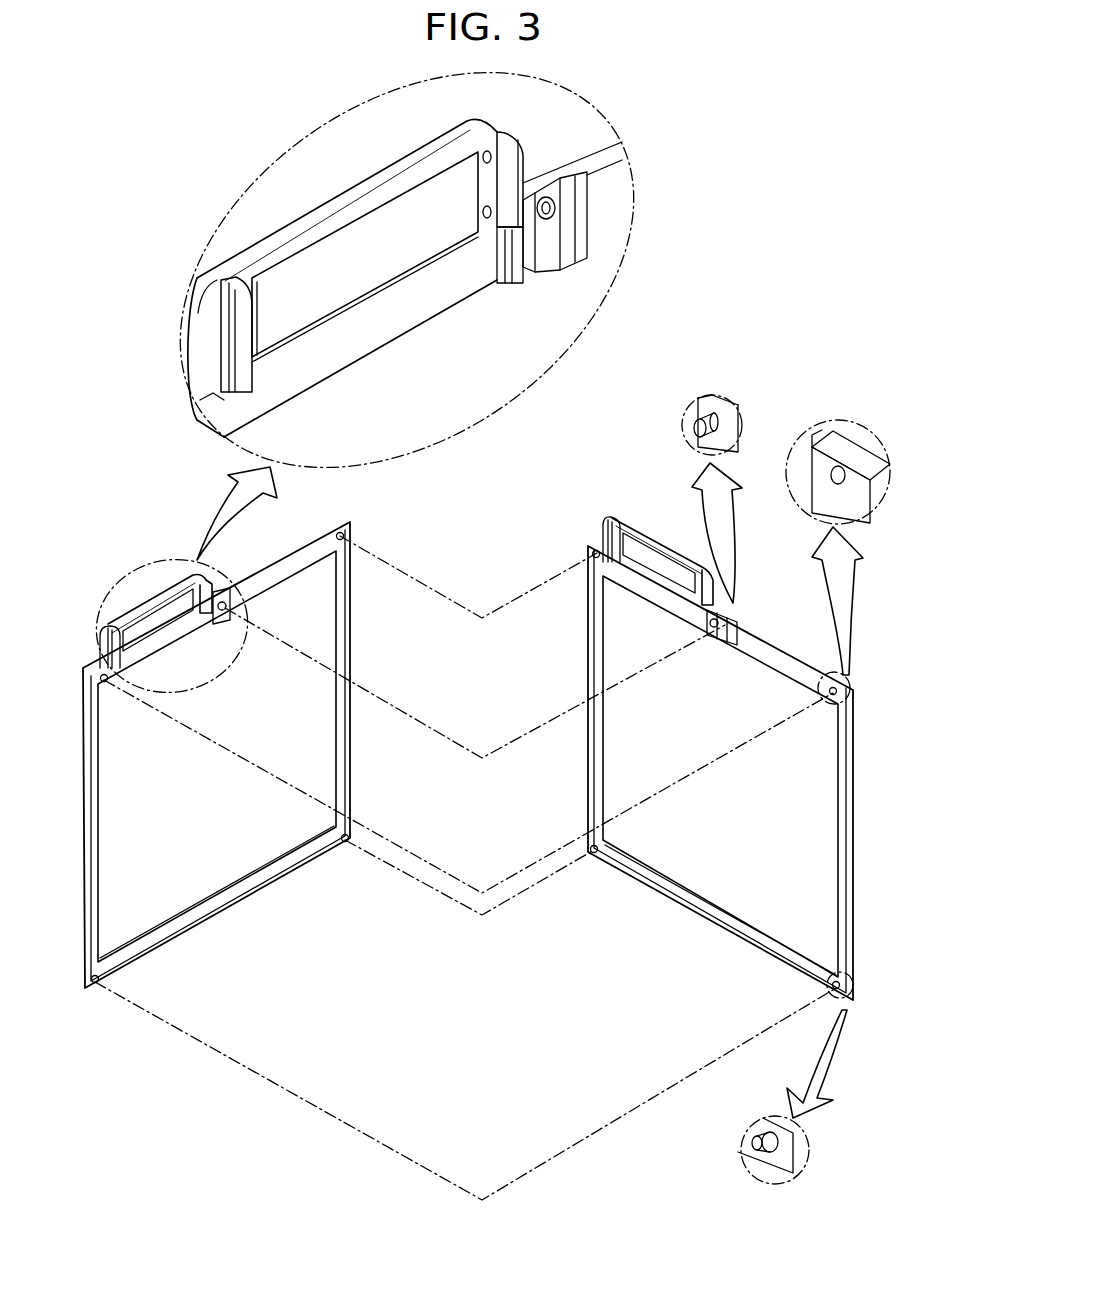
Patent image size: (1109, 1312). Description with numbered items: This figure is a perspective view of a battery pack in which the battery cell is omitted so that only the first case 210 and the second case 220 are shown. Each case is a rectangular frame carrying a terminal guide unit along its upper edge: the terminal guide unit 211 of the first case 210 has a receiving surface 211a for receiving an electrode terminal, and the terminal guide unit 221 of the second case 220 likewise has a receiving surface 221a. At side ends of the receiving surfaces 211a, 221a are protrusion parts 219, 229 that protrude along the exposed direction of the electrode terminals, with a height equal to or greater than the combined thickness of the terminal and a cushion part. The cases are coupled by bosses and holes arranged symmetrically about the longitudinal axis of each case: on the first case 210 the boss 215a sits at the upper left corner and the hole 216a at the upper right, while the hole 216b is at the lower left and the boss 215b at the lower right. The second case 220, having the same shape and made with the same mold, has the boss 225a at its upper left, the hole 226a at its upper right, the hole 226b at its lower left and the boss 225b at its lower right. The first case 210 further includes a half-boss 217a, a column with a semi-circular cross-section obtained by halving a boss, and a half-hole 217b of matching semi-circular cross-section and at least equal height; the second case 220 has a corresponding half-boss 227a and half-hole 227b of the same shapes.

The first case 210 is at (155, 952).
The terminal guide unit 211 is at (212, 393).
The receiving surface 211a is at (410, 237).
The boss 215a is at (106, 683).
The boss 215b is at (345, 843).
The hole 216a is at (348, 537).
The hole 216b is at (97, 983).
The half-boss 217a is at (558, 222).
The half-hole 217b is at (557, 208).
The protrusion part 219 is at (233, 288).
The second case 220 is at (715, 925).
The terminal guide unit 221 is at (650, 547).
The receiving surface 221a is at (670, 570).
The boss 225a is at (592, 554).
The boss 225b is at (837, 990).
The hole 226a is at (833, 697).
The hole 226b is at (593, 853).
The half-boss 227a is at (694, 432).
The half-hole 227b is at (700, 447).
The protrusion part 229 is at (640, 548).